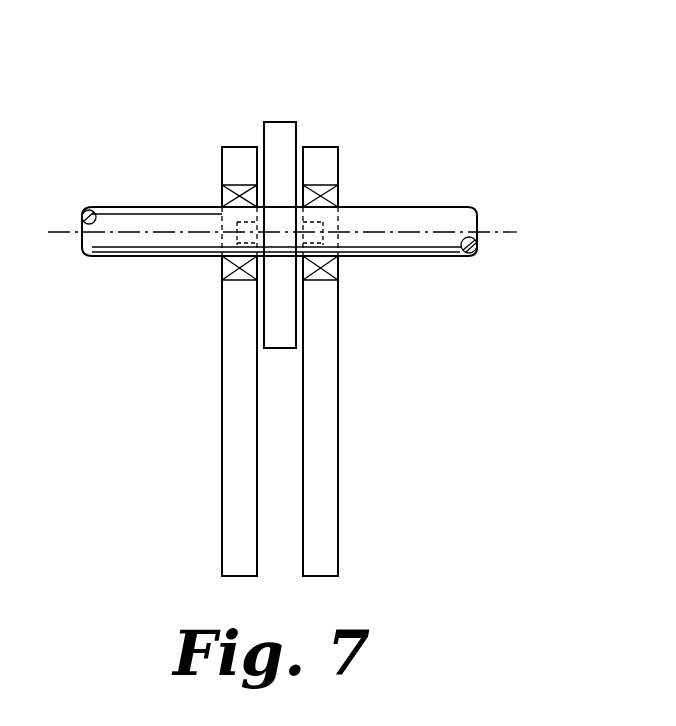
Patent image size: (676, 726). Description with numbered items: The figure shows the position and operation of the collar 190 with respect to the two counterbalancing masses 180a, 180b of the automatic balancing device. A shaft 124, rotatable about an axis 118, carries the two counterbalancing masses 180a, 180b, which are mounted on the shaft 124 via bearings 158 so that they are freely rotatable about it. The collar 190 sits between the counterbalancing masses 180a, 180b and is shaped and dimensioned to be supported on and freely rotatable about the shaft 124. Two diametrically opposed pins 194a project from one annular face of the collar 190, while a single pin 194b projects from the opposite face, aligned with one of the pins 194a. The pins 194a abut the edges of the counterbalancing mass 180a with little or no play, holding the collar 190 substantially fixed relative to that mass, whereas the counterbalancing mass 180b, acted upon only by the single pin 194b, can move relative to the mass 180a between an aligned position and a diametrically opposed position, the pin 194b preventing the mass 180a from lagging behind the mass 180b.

The axis 118 is at (490, 230).
The shaft 124 is at (412, 207).
The bearings 158 is at (222, 200).
The counterbalancing mass 180a is at (233, 469).
The counterbalancing mass 180b is at (323, 452).
The collar 190 is at (280, 135).
The pins 194a is at (242, 238).
The pin 194b is at (320, 240).